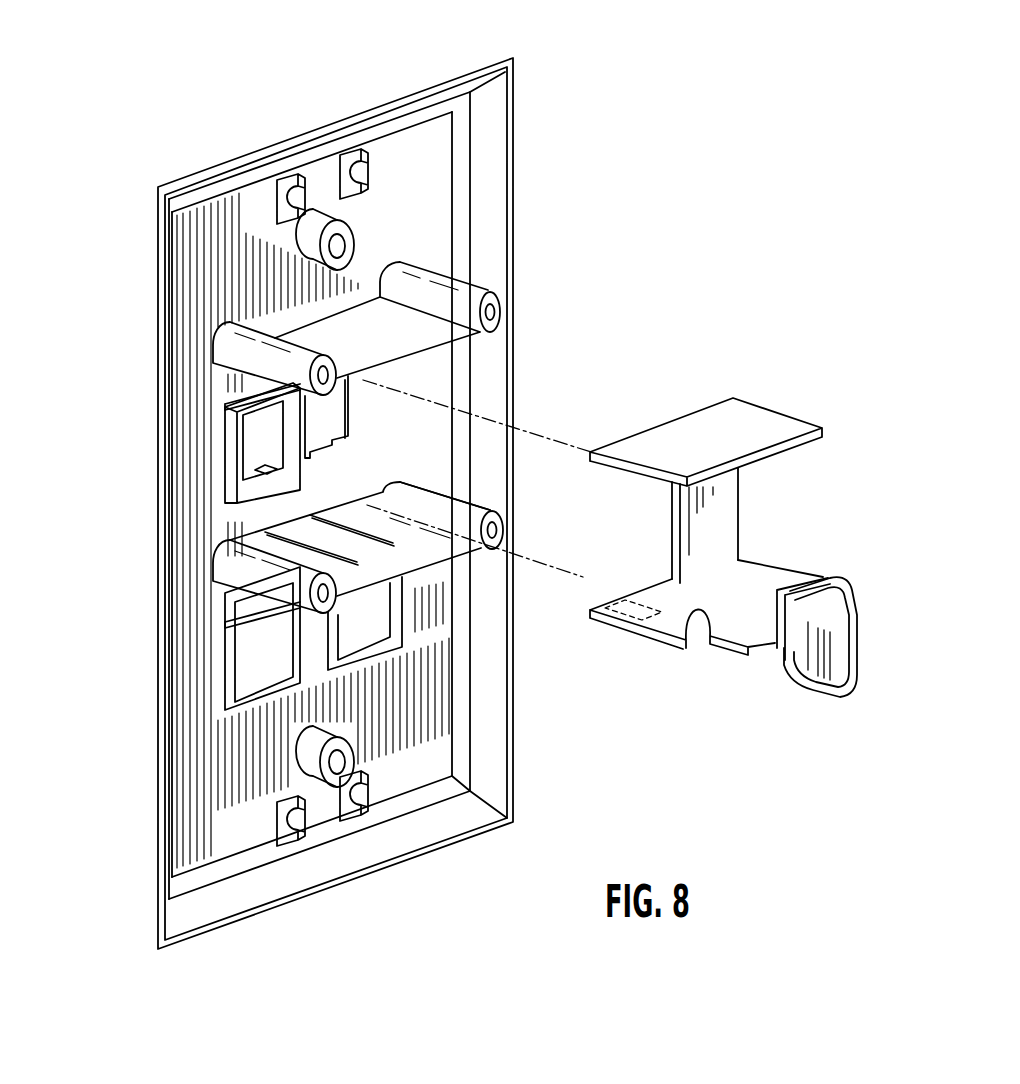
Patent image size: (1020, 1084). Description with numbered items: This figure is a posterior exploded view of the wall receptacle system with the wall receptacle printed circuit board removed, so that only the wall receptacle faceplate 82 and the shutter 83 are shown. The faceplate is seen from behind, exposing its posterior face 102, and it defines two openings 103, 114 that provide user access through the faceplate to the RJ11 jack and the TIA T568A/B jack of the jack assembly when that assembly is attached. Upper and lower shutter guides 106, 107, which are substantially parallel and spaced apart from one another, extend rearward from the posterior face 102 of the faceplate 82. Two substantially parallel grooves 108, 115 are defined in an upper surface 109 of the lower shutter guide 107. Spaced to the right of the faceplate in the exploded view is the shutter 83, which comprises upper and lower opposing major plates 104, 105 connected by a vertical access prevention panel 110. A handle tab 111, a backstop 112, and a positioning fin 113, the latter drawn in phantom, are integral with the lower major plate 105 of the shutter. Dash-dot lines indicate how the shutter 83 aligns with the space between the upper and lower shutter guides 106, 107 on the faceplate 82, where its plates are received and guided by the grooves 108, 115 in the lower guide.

The wall receptacle faceplate 82 is at (400, 163).
The shutter 83 is at (752, 422).
The posterior face 102 is at (425, 213).
The opening 103 is at (340, 412).
The upper major plate 104 is at (657, 445).
The lower major plate 105 is at (688, 617).
The upper shutter guide 106 is at (402, 325).
The lower shutter guide 107 is at (265, 580).
The groove 108 is at (322, 530).
The upper surface 109 is at (263, 543).
The vertical access prevention panel 110 is at (713, 515).
The handle tab 111 is at (833, 643).
The backstop 112 is at (832, 578).
The positioning fin 113 is at (623, 610).
The opening 114 is at (260, 440).
The groove 115 is at (382, 537).